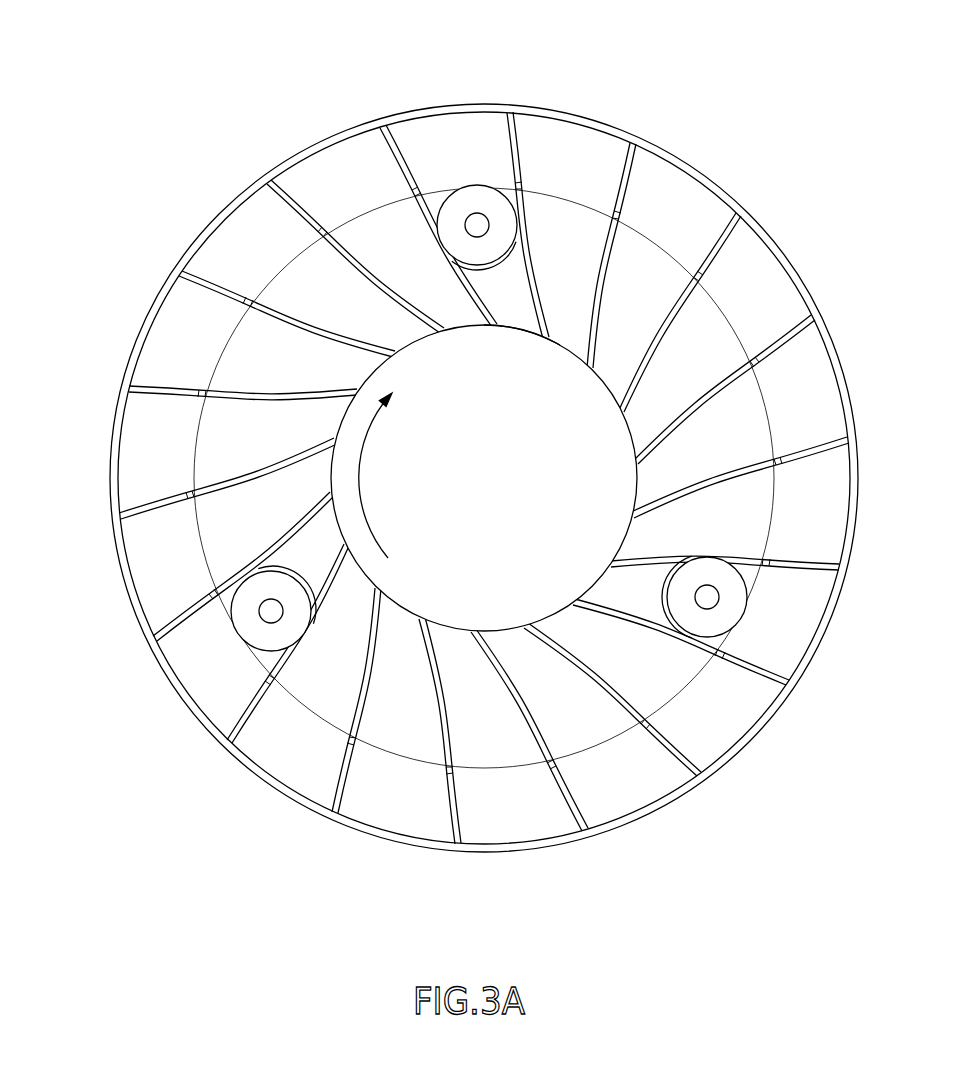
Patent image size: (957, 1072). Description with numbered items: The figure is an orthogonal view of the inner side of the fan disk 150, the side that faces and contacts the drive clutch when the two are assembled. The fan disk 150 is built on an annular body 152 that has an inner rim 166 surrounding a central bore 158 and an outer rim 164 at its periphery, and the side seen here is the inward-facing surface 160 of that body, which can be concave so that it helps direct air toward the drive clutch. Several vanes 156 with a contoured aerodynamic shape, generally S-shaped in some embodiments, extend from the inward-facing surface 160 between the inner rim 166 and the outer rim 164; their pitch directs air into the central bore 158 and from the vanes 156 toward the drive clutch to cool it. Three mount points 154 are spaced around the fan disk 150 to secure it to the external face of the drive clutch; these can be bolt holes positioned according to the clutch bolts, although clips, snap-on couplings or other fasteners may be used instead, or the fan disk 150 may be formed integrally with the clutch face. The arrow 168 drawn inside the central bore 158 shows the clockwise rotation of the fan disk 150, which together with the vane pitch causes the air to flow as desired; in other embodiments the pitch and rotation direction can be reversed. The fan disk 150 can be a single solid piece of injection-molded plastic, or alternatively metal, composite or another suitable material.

The fan disk 150 is at (455, 450).
The annular body 152 is at (215, 456).
The mount points 154 is at (477, 225).
The vanes 156 is at (229, 393).
The central bore 158 is at (513, 542).
The inward-facing surface 160 is at (342, 653).
The outer rim 164 is at (705, 174).
The inner rim 166 is at (403, 330).
The arrow 168 is at (360, 473).